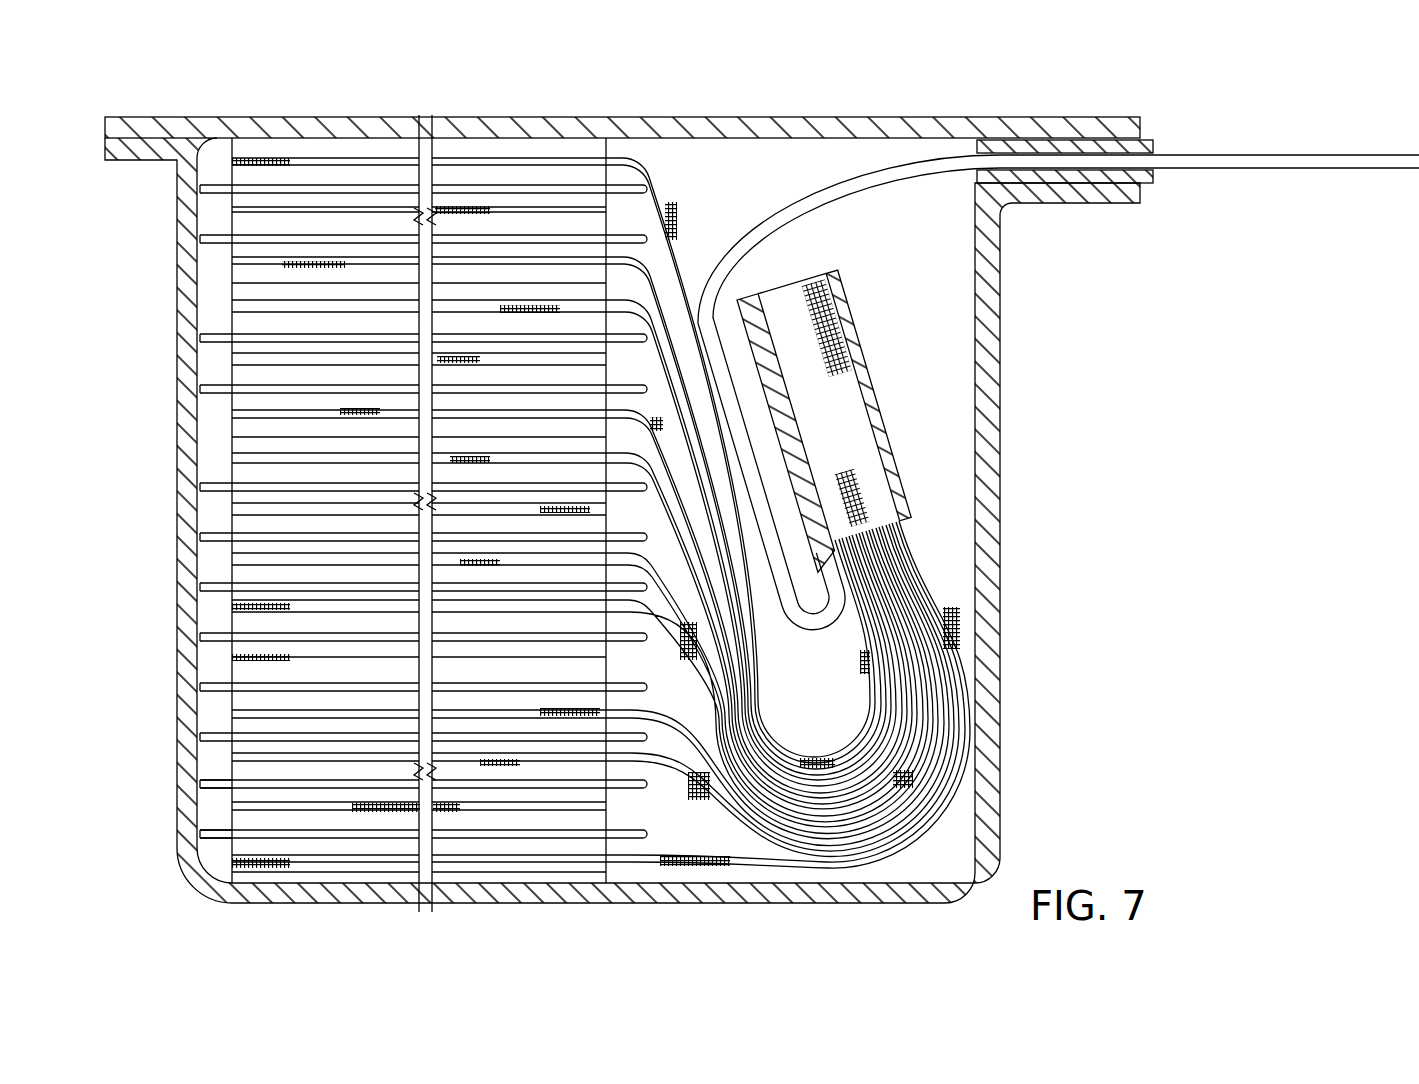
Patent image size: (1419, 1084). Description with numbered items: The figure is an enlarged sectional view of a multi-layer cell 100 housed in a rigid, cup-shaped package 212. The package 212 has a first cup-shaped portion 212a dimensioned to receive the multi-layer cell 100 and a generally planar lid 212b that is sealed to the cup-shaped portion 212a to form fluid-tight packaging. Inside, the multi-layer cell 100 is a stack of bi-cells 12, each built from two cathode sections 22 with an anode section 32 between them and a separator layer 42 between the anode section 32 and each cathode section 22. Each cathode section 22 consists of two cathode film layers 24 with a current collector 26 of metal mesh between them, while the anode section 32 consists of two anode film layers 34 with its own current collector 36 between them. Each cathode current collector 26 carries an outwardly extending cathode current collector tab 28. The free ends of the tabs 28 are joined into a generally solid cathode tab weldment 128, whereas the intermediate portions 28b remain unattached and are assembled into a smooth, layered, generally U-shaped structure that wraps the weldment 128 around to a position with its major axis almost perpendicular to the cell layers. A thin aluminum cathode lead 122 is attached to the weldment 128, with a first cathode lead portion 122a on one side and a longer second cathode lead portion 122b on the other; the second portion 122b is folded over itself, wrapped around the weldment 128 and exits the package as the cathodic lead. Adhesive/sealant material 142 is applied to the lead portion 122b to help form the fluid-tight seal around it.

The multi-layer cell 100 is at (758, 497).
The bi-cell 12 is at (414, 525).
The cathode section 22 is at (228, 455).
The cathode film layer 24 is at (517, 875).
The current collector 26 is at (567, 863).
The cathode current collector tab 28 is at (665, 265).
The intermediate portion 28b is at (945, 706).
The anode section 32 is at (224, 353).
The anode film layer 34 is at (290, 818).
The current collector 36 is at (335, 808).
The separator layer 42 is at (215, 835).
The cathode lead 122 is at (1254, 150).
The first cathode lead portion 122a is at (905, 421).
The second cathode lead portion 122b is at (1318, 152).
The cathode tab weldment 128 is at (868, 392).
The adhesive/sealant material 142 is at (1152, 177).
The package 212 is at (622, 481).
The cup-shaped portion 212a is at (1003, 414).
The lid 212b is at (855, 118).